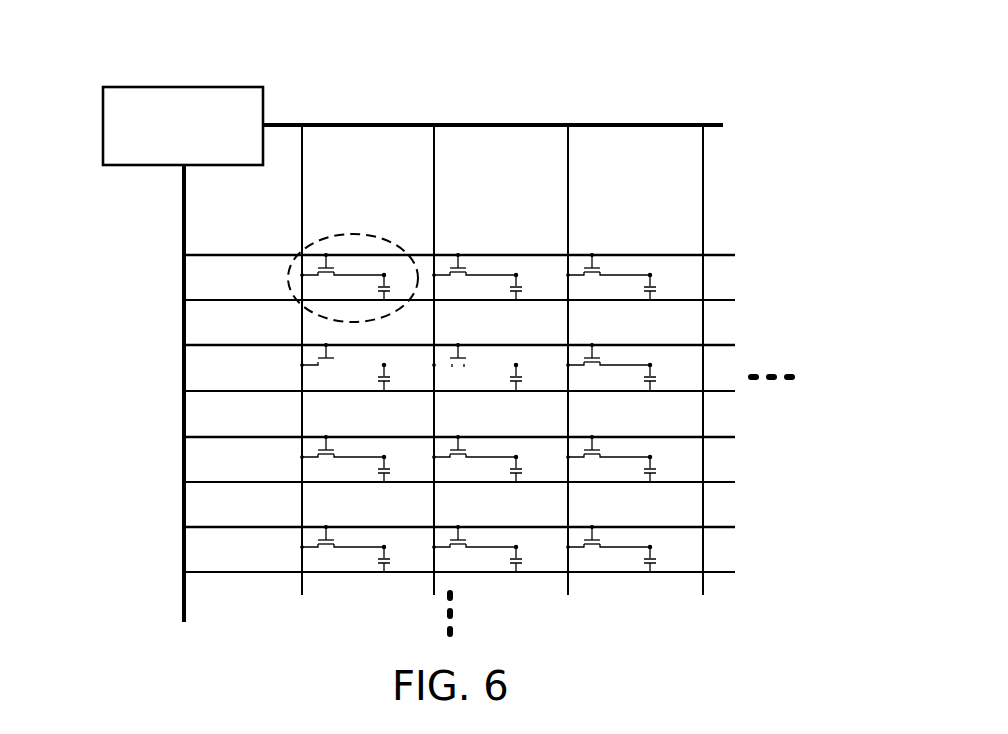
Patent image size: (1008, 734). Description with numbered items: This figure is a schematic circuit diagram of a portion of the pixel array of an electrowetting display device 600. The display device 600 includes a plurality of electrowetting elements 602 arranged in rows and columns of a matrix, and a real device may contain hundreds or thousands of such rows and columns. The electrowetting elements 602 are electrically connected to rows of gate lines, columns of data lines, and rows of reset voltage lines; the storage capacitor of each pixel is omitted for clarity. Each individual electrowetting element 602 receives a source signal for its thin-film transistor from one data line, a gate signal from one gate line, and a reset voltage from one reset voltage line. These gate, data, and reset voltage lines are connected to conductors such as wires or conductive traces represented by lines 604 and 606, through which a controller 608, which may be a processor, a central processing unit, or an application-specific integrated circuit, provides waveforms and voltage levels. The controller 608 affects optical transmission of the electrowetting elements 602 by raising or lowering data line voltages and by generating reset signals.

The electrowetting display device 600 is at (652, 48).
The electrowetting element 602 is at (323, 240).
The line 604 is at (208, 180).
The line 606 is at (367, 142).
The controller 608 is at (183, 126).